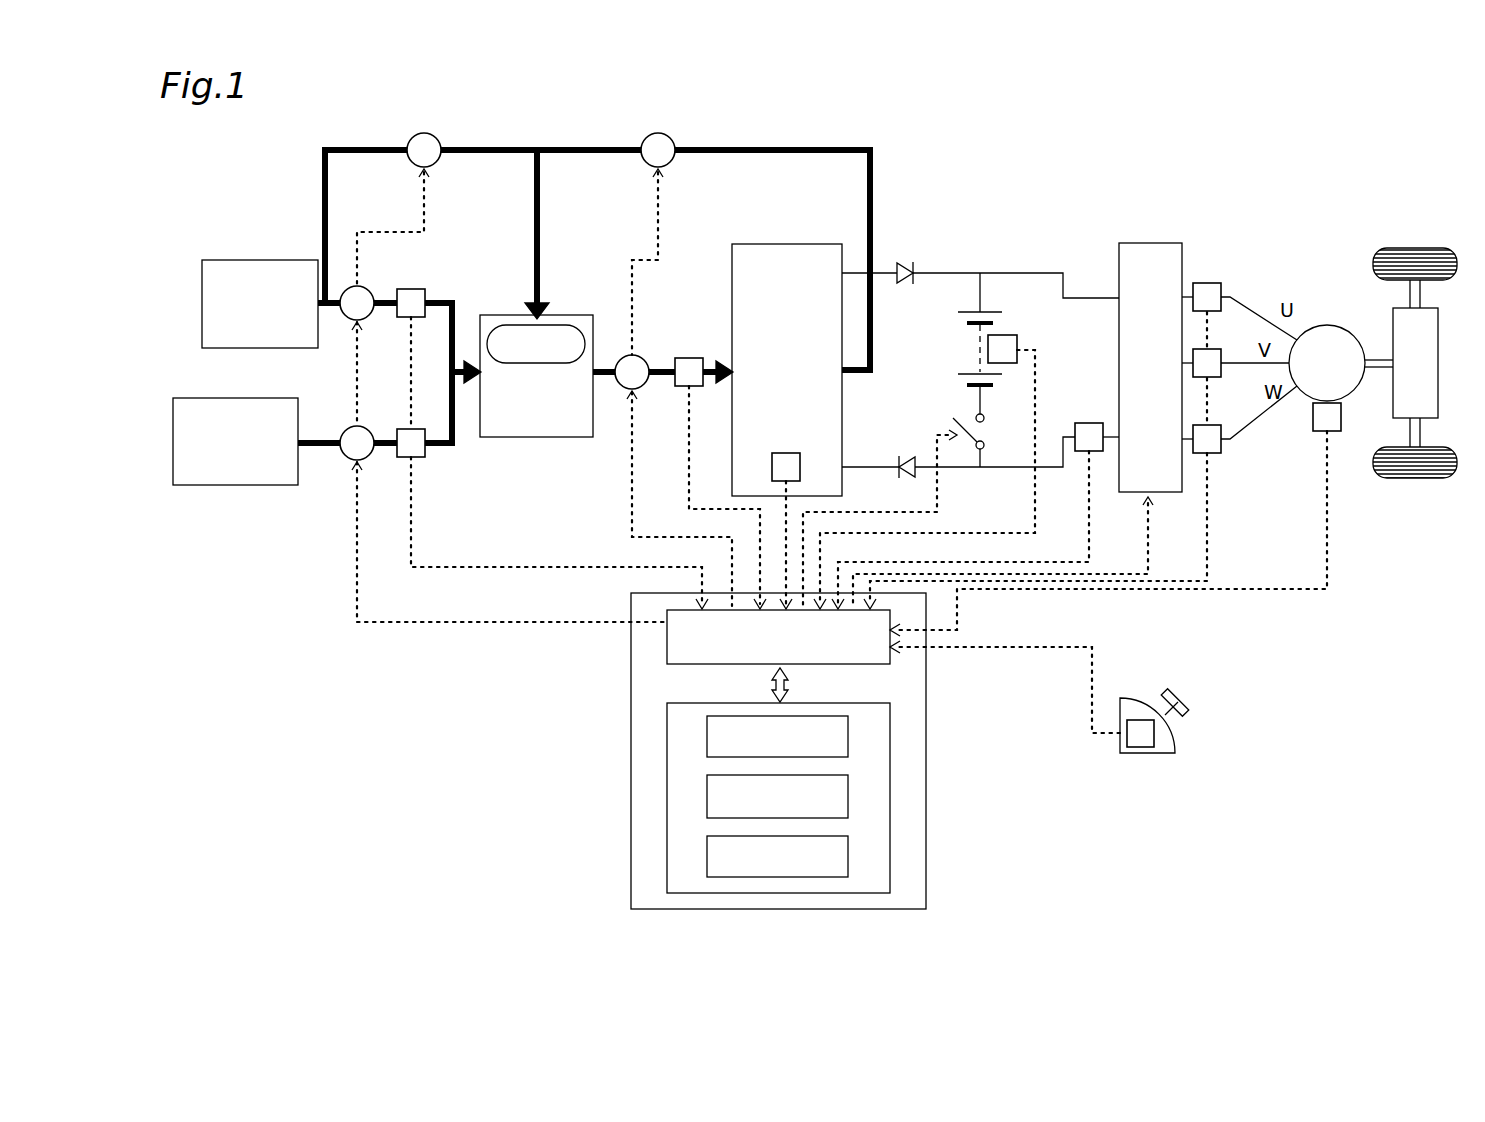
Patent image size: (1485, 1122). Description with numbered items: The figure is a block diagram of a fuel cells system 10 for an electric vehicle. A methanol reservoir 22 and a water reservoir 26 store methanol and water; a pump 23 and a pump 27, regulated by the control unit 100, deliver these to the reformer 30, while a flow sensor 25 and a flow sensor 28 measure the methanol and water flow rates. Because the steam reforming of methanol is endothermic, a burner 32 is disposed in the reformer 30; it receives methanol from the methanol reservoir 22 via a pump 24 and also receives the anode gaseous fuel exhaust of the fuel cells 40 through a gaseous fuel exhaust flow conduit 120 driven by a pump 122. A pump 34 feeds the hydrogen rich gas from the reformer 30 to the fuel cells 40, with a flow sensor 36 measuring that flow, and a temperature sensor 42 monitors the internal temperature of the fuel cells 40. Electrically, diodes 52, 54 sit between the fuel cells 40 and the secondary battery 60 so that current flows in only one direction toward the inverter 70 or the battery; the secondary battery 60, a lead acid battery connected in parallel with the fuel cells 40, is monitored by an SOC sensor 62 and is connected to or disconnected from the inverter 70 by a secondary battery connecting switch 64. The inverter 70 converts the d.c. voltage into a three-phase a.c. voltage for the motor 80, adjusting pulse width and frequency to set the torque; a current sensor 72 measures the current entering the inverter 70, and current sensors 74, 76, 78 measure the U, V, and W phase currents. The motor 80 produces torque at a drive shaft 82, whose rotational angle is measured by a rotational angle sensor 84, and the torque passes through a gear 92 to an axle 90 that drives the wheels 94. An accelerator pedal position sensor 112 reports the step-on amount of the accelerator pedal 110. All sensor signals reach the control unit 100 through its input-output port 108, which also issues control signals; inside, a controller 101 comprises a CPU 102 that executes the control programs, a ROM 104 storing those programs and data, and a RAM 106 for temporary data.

The fuel cells system 10 is at (963, 180).
The methanol reservoir 22 is at (262, 260).
The pump 23 is at (367, 290).
The pump 24 is at (437, 140).
The flow sensor 25 is at (411, 289).
The water reservoir 26 is at (250, 398).
The pump 27 is at (350, 460).
The flow sensor 28 is at (415, 457).
The reformer 30 is at (540, 383).
The burner 32 is at (555, 325).
The pump 34 is at (640, 357).
The flow sensor 36 is at (689, 358).
The fuel cells 40 is at (814, 350).
The temperature sensor 42 is at (800, 467).
The diode 52 is at (905, 262).
The diode 54 is at (905, 456).
The secondary battery 60 is at (960, 328).
The SOC sensor 62 is at (1007, 335).
The secondary battery connecting switch 64 is at (986, 443).
The inverter 70 is at (1160, 243).
The current sensor 72 is at (1089, 423).
The current sensor 74 is at (1207, 283).
The current sensor 76 is at (1207, 349).
The current sensor 78 is at (1207, 425).
The motor 80 is at (1320, 325).
The drive shaft 82 is at (1377, 370).
The rotational angle sensor 84 is at (1313, 431).
The axle 90 is at (1420, 296).
The gear 92 is at (1423, 373).
The wheels 94 is at (1430, 250).
The control unit 100 is at (779, 751).
The controller 101 is at (890, 760).
The CPU 102 is at (707, 737).
The ROM 104 is at (707, 802).
The RAM 106 is at (707, 858).
The input-output port 108 is at (667, 645).
The accelerator pedal 110 is at (1190, 700).
The accelerator pedal position sensor 112 is at (1140, 747).
The gaseous fuel exhaust flow conduit 120 is at (822, 148).
The pump 122 is at (670, 140).